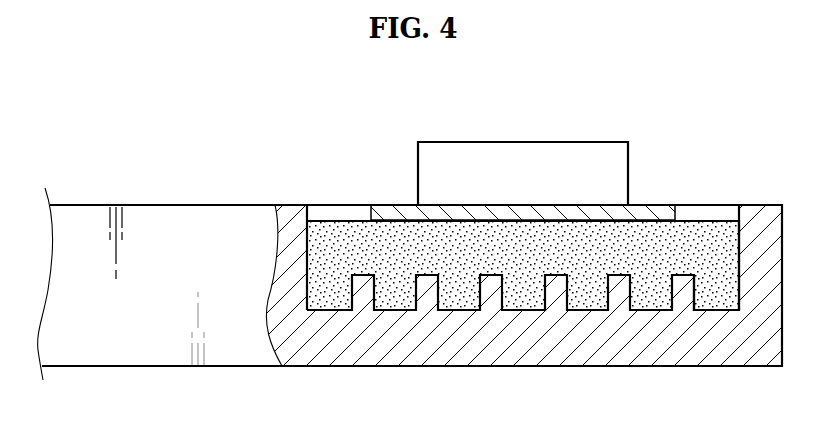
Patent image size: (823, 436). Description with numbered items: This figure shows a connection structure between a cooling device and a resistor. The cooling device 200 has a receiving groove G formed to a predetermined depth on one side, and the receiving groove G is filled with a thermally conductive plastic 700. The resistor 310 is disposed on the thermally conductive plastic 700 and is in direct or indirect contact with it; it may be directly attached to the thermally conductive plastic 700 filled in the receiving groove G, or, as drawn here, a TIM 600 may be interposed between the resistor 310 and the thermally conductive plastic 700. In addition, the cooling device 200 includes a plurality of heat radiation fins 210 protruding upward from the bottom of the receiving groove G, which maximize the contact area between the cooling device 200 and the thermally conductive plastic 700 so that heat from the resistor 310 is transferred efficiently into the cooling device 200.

The cooling device 200 is at (160, 205).
The heat radiation fins 210 is at (555, 289).
The resistor 310 is at (522, 141).
The TIM 600 is at (385, 212).
The thermally conductive plastic 700 is at (707, 245).
The receiving groove G is at (718, 302).